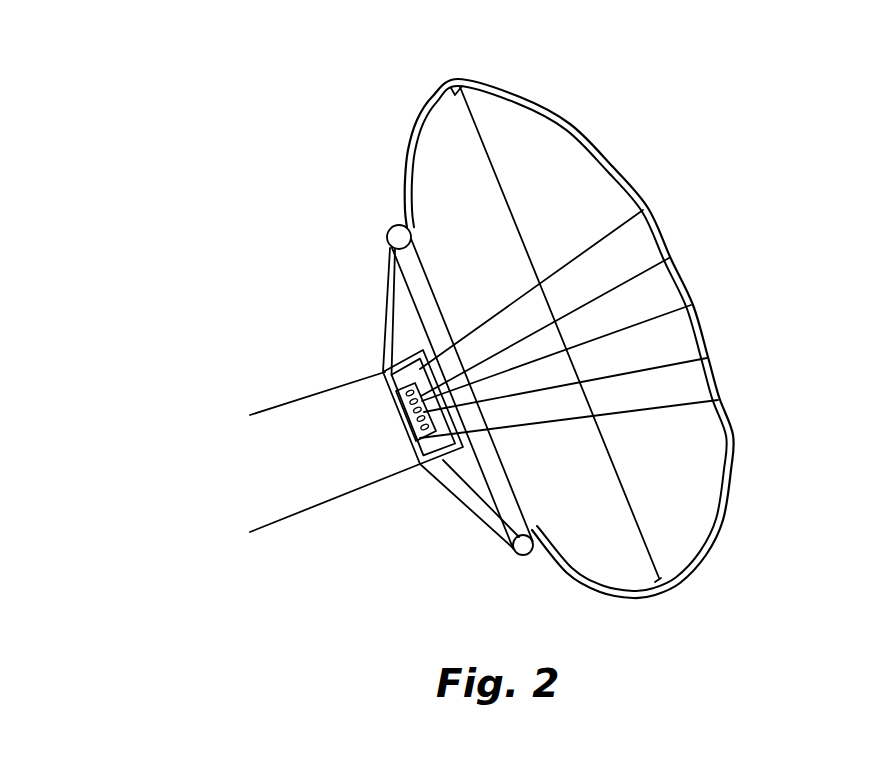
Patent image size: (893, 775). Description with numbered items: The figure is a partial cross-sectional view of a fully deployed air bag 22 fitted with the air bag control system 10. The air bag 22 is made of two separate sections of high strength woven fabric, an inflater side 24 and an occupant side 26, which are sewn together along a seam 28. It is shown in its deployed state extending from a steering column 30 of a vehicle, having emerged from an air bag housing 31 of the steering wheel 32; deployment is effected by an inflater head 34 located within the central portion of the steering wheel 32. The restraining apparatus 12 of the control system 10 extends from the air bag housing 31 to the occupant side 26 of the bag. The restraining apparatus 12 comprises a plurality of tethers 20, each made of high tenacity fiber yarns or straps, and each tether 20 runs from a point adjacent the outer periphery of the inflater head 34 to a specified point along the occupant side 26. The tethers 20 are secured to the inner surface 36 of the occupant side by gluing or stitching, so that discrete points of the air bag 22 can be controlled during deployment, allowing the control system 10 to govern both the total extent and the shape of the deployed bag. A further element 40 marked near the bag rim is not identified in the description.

The air bag control system 10 is at (684, 534).
The restraining apparatus 12 is at (706, 445).
The tethers 20 is at (644, 262).
The air bag 22 is at (666, 88).
The inflater side 24 is at (407, 150).
The occupant side 26 is at (534, 98).
The seam 28 is at (493, 173).
The steering column 30 is at (301, 547).
The air bag housing 31 is at (445, 462).
The steering wheel 32 is at (389, 323).
The inflater head 34 is at (403, 408).
The inner surface 36 is at (577, 143).
The inner rim edge 40 is at (613, 163).